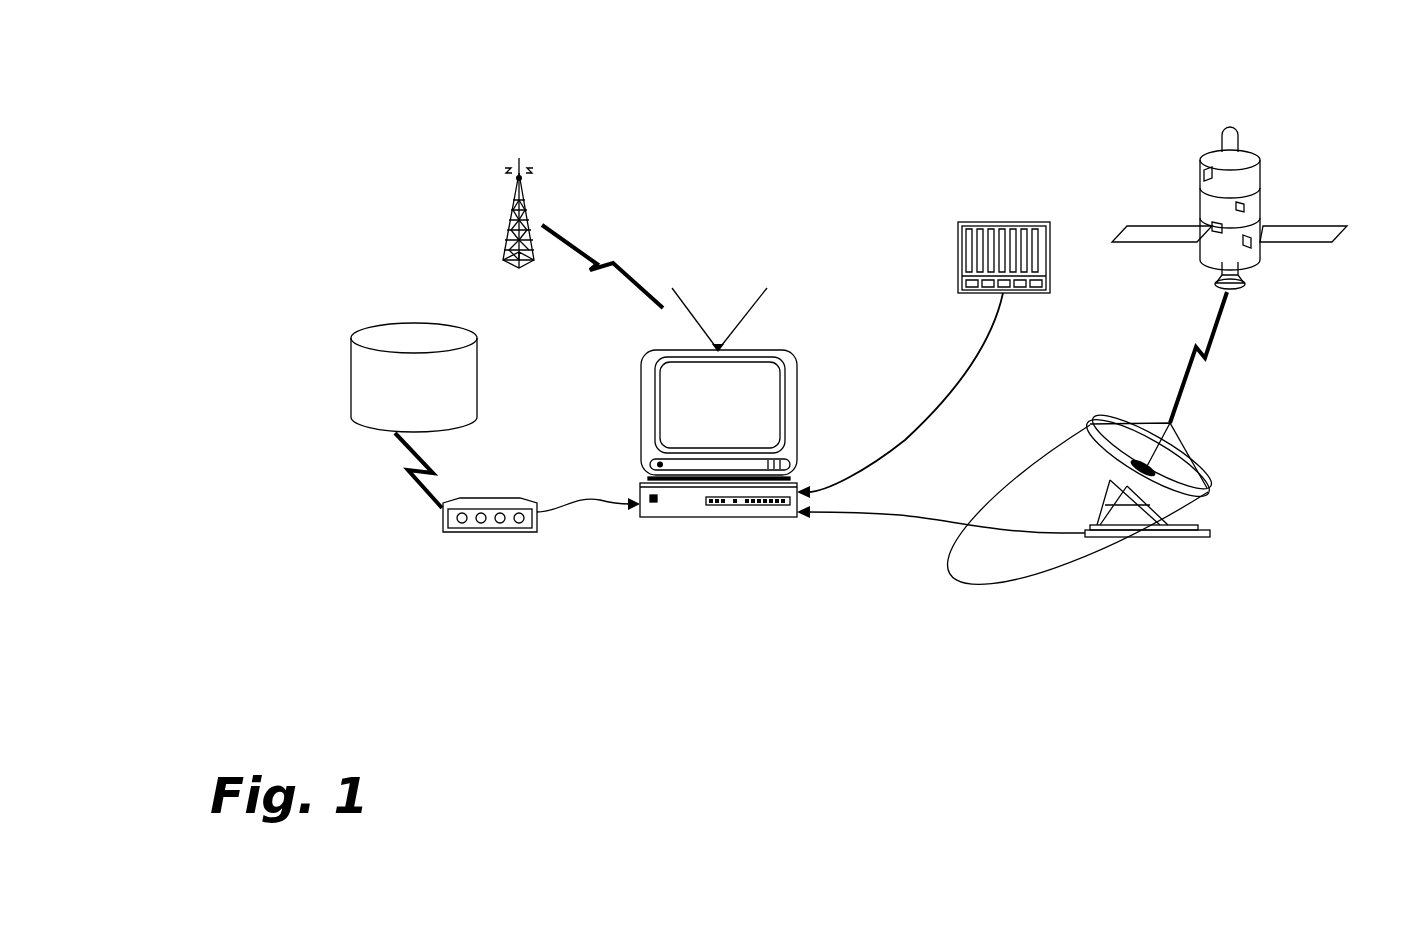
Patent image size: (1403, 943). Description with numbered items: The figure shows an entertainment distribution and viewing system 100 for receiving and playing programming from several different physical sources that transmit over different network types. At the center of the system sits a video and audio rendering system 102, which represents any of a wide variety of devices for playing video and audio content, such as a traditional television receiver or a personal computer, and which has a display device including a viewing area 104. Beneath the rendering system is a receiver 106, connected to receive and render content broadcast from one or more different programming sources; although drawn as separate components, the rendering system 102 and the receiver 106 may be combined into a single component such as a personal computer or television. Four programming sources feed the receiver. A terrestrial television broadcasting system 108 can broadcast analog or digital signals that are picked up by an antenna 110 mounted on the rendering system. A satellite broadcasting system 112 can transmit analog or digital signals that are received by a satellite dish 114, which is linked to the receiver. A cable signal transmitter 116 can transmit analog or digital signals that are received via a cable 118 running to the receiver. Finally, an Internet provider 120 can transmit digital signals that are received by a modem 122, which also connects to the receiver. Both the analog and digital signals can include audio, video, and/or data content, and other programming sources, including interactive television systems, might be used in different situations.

The entertainment distribution and viewing system 100 is at (674, 106).
The video and audio rendering system 102 is at (790, 347).
The viewing area 104 is at (765, 400).
The receiver 106 is at (672, 511).
The terrestrial television broadcasting system 108 is at (515, 196).
The antenna 110 is at (683, 312).
The satellite broadcasting system 112 is at (1200, 165).
The satellite dish 114 is at (1205, 480).
The cable signal transmitter 116 is at (1003, 222).
The cable 118 is at (940, 405).
The Internet provider 120 is at (430, 330).
The modem 122 is at (492, 498).